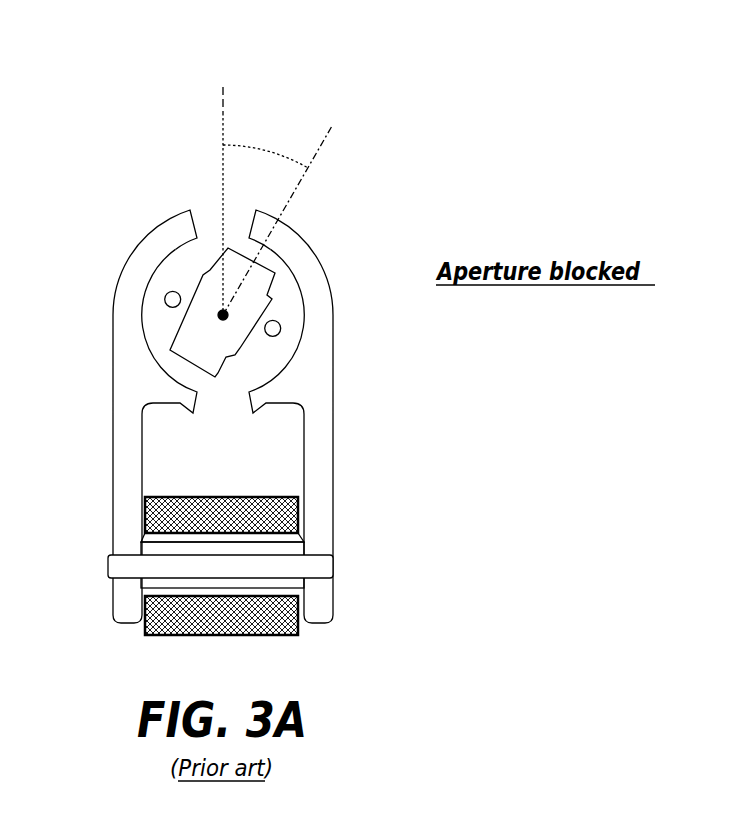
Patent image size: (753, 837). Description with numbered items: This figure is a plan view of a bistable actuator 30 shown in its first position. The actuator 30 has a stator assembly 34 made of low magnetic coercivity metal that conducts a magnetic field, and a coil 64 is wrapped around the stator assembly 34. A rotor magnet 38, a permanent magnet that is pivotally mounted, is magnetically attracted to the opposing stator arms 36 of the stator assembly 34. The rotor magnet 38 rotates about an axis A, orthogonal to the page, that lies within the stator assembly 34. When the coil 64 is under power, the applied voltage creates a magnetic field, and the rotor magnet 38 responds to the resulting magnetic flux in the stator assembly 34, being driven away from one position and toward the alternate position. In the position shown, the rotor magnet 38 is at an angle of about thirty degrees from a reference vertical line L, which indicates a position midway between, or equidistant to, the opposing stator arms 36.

The actuator 30 is at (427, 495).
The stator assembly 34 is at (128, 272).
The stator arms 36 is at (170, 221).
The rotor magnet 38 is at (267, 302).
The coil 64 is at (147, 520).
The axis A is at (223, 315).
The reference vertical line L is at (222, 110).